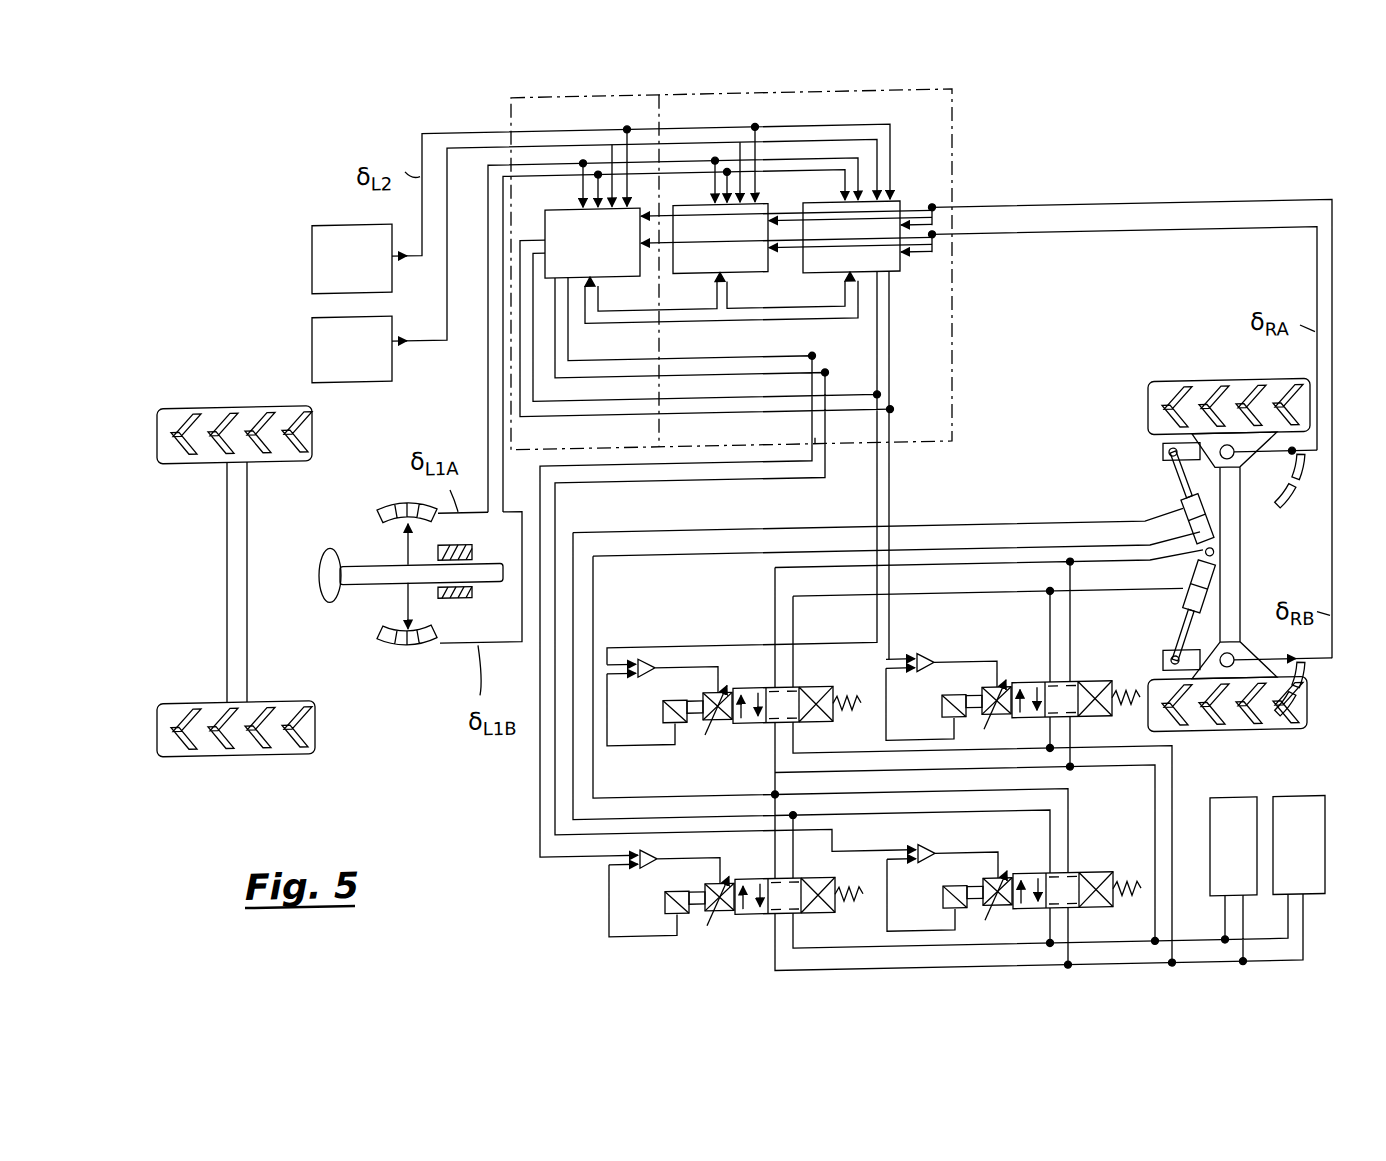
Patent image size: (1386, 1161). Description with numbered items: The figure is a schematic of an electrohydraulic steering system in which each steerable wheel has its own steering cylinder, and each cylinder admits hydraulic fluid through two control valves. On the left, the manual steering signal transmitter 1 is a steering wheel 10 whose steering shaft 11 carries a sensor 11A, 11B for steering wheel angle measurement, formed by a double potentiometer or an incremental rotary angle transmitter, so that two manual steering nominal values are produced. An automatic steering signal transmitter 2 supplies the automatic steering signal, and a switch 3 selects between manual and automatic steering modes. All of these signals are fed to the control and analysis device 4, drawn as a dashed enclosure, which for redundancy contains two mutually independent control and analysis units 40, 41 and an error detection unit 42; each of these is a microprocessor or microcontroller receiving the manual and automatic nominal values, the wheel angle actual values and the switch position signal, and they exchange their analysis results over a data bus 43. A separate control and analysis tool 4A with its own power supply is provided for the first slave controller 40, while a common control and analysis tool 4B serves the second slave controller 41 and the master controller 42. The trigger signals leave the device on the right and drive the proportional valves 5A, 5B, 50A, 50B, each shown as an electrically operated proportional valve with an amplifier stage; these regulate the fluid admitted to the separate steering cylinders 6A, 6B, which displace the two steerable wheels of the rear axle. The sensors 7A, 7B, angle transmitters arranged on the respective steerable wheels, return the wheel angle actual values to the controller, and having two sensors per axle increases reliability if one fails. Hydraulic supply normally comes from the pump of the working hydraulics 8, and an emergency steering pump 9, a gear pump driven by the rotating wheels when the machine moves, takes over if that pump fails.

The manual steering signal transmitter 1 is at (421, 567).
The automatic steering signal transmitter 2 is at (352, 259).
The switch 3 is at (352, 349).
The control and analysis device 4 is at (950, 183).
The control and analysis tool 4A is at (522, 116).
The control and analysis tool 4B is at (923, 372).
The proportional valve 5A is at (1085, 879).
The proportional valve 5B is at (750, 919).
The steering cylinder 6A is at (1178, 530).
The steering cylinder 6B is at (1180, 608).
The sensor 7A is at (1307, 504).
The sensor 7B is at (1310, 684).
The pump of the working hydraulics 8 is at (1233, 846).
The emergency steering pump 9 is at (1299, 844).
The steering wheel 10 is at (322, 592).
The steering shaft 11 is at (495, 582).
The sensor 11A is at (395, 501).
The sensor 11B is at (408, 644).
The control and analysis unit 40 is at (592, 243).
The control and analysis unit 41 is at (851, 238).
The error detection unit 42 is at (720, 240).
The data bus 43 is at (793, 300).
The proportional valve 50A is at (1030, 686).
The proportional valve 50B is at (735, 686).